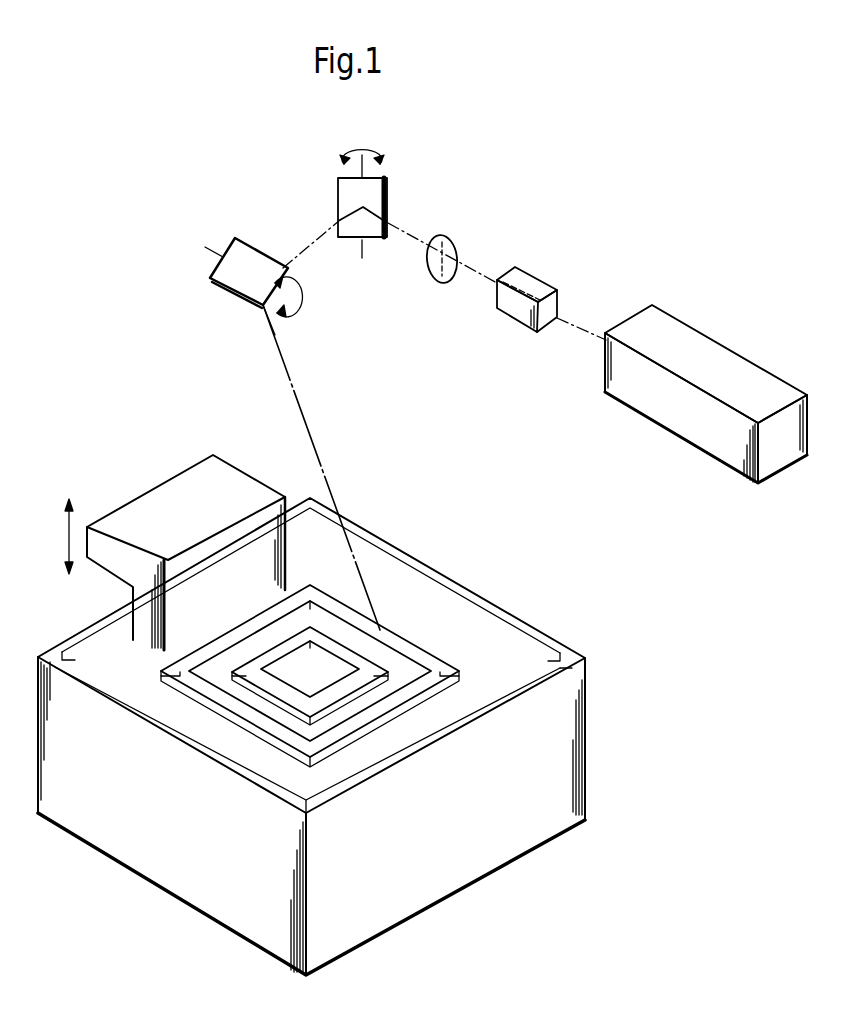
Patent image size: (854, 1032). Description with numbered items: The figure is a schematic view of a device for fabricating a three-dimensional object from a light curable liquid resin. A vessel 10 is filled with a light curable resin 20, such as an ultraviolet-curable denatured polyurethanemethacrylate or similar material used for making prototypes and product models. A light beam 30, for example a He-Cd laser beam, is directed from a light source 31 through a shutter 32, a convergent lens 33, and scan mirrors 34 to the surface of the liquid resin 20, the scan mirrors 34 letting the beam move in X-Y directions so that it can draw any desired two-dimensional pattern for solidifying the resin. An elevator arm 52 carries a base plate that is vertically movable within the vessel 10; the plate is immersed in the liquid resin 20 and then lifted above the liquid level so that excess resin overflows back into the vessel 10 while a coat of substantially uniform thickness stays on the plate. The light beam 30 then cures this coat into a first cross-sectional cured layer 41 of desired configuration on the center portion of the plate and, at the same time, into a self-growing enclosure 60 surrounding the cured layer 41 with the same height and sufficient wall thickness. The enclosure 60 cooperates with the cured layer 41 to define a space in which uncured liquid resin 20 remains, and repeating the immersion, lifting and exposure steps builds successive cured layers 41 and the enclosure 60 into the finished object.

The vessel 10 is at (585, 705).
The light curable resin 20 is at (477, 643).
The light beam 30 is at (312, 448).
The light source 31 is at (733, 362).
The shutter 32 is at (543, 290).
The convergent lens 33 is at (453, 242).
The scan mirrors 34 is at (338, 202).
The cured layer 41 is at (345, 680).
The elevator arm 52 is at (168, 497).
The self-growing enclosure 60 is at (412, 647).